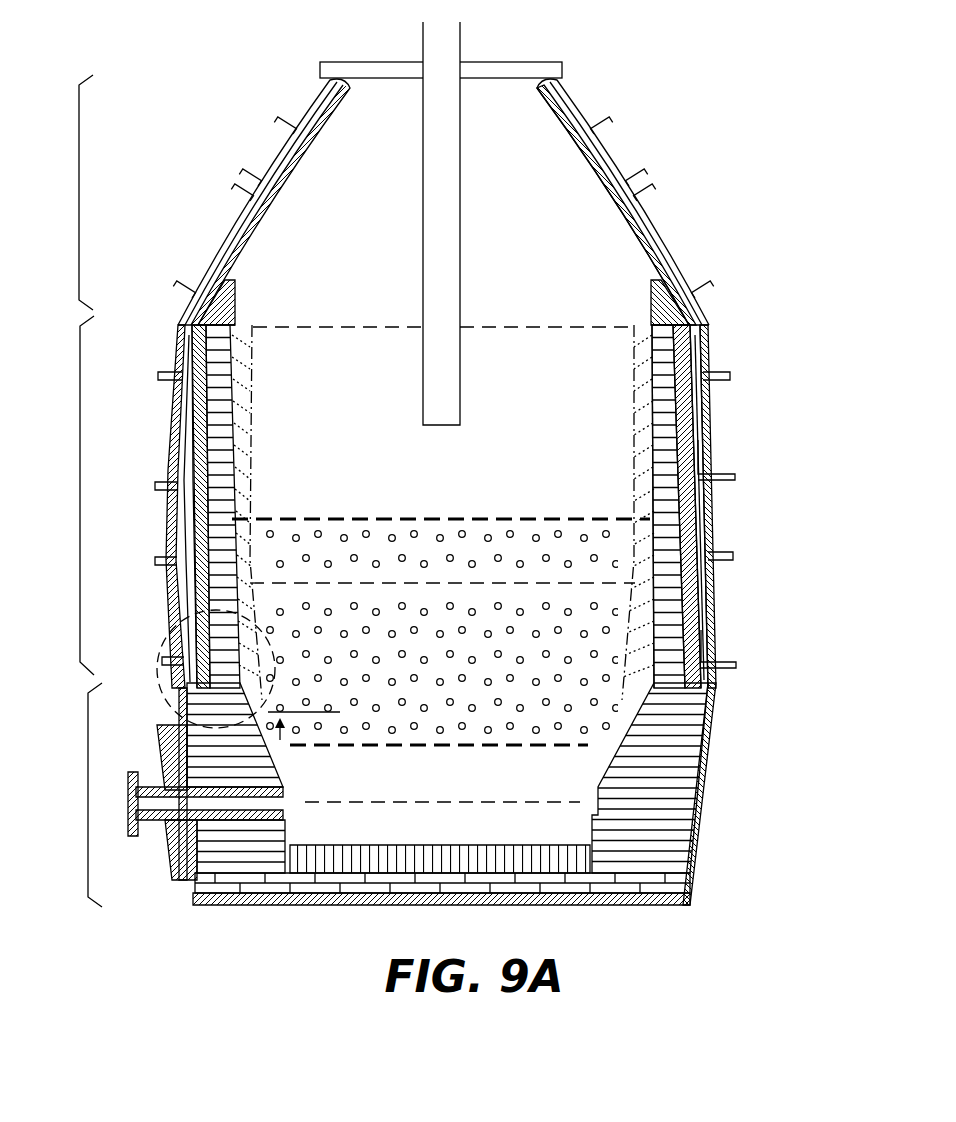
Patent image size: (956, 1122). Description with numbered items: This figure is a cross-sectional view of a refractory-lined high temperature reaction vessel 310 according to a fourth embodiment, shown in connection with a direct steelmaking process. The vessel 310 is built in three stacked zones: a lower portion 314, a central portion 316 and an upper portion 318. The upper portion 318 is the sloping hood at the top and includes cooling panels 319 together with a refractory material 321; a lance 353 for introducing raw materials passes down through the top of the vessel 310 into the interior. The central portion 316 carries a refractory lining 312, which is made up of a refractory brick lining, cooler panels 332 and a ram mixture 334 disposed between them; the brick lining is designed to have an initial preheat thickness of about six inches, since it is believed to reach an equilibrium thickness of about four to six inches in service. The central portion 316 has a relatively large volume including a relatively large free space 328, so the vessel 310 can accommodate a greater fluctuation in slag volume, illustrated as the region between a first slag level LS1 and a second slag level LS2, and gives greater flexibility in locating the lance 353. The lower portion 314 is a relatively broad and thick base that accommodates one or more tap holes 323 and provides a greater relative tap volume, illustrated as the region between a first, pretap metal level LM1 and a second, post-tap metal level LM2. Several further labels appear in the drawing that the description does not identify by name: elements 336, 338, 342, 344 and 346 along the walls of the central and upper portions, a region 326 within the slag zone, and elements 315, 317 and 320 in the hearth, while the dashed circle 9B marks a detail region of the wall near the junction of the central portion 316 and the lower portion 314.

The reaction vessel 310 is at (634, 108).
The lance 353 is at (463, 96).
The upper portion 318 is at (60, 192).
The central portion 316 is at (61, 495).
The lower portion 314 is at (68, 795).
The steel shell 336 is at (654, 210).
The refractory material 321 is at (604, 170).
The cooling panels 319 is at (686, 268).
The free space 328 is at (512, 350).
The refractory lining 312 is at (258, 414).
The slag accretion layer 342 is at (232, 502).
The refractory brick wall 338 is at (666, 392).
The hot face of brick wall 344 is at (656, 455).
The ram mixture 334 is at (692, 398).
The cooler panels 332 is at (712, 432).
The cooling water pipe 346 is at (740, 476).
The first slag level LS1 is at (441, 504).
The second slag level LS2 is at (442, 569).
The first (pretap) metal level LM1 is at (428, 728).
The second (post tap) metal level LM2 is at (438, 787).
The slag layer 326 is at (430, 544).
The hearth shell 317 is at (718, 724).
The hearth refractory 320 is at (550, 768).
The hearth bottom 315 is at (706, 888).
The tap hole 323 is at (122, 806).
The detail view location 9B is at (196, 628).